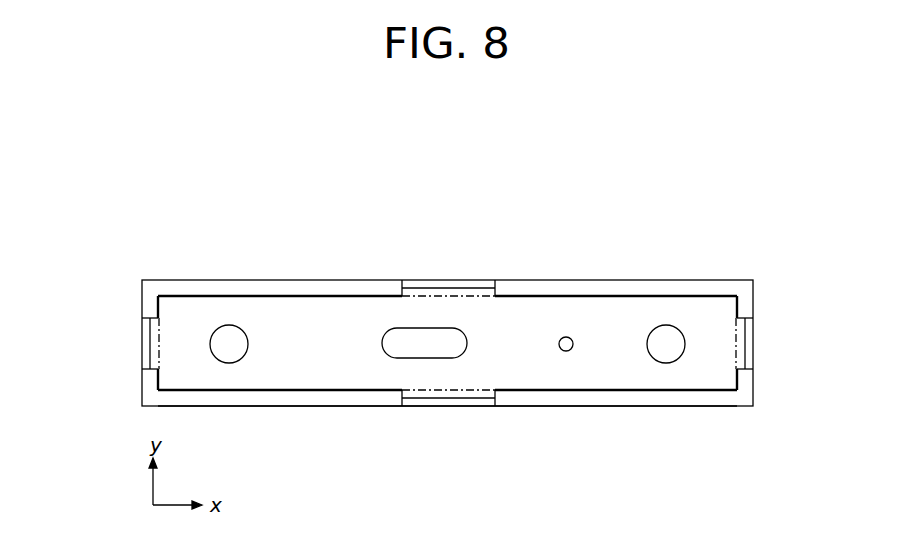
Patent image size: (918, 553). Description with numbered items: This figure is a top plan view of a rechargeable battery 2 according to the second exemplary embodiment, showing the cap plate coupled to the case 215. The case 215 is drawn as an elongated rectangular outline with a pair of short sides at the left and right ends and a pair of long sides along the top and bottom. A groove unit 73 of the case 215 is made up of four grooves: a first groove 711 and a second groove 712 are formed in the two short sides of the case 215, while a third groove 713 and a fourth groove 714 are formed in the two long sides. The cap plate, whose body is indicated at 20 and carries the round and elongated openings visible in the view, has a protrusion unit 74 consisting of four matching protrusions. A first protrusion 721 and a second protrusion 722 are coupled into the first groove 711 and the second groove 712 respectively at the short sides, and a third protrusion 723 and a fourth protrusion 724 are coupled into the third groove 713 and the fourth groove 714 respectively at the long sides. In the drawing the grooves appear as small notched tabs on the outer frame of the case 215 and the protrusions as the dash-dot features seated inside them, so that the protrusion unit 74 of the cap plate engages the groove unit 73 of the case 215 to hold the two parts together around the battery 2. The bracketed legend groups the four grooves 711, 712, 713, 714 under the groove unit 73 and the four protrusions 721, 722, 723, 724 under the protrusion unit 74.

The rechargeable battery 2 is at (473, 177).
The plate 20 is at (533, 318).
The case 215 is at (585, 408).
The first groove 711 is at (148, 350).
The second groove 712 is at (748, 352).
The third groove 713 is at (422, 284).
The fourth groove 714 is at (421, 402).
The first protrusion 721 is at (150, 325).
The second protrusion 722 is at (742, 325).
The third protrusion 723 is at (468, 292).
The fourth protrusion 724 is at (468, 393).
The groove unit 73 is at (690, 88).
The protrusion unit 74 is at (802, 88).